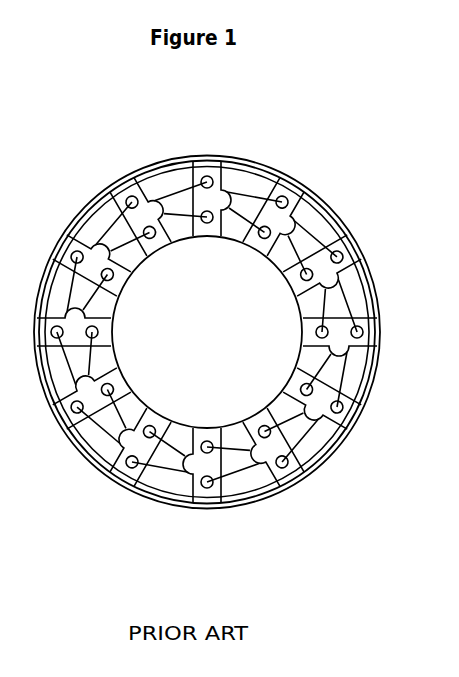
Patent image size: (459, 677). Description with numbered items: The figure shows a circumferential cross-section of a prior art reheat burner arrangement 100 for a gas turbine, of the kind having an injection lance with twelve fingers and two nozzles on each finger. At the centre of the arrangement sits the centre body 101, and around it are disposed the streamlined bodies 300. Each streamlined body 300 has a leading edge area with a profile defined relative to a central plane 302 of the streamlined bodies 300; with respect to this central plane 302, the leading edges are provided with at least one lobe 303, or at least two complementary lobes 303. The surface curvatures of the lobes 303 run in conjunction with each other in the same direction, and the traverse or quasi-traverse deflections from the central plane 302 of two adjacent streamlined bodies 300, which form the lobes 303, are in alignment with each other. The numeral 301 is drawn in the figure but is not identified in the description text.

The reheat burner arrangement 100 is at (178, 147).
The centre body 101 is at (222, 340).
The streamlined body 300 is at (356, 232).
The sliding block segment 301 is at (279, 217).
The central plane 302 is at (177, 278).
The lobe 303 is at (232, 162).